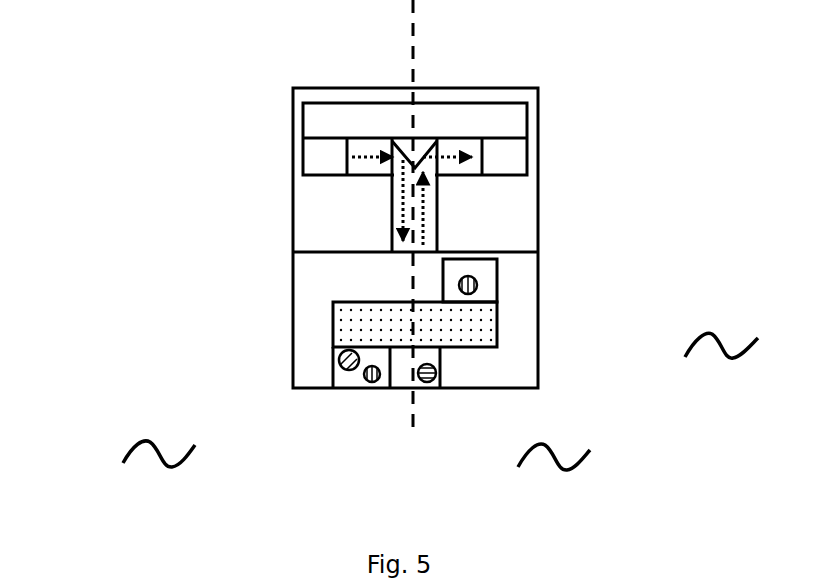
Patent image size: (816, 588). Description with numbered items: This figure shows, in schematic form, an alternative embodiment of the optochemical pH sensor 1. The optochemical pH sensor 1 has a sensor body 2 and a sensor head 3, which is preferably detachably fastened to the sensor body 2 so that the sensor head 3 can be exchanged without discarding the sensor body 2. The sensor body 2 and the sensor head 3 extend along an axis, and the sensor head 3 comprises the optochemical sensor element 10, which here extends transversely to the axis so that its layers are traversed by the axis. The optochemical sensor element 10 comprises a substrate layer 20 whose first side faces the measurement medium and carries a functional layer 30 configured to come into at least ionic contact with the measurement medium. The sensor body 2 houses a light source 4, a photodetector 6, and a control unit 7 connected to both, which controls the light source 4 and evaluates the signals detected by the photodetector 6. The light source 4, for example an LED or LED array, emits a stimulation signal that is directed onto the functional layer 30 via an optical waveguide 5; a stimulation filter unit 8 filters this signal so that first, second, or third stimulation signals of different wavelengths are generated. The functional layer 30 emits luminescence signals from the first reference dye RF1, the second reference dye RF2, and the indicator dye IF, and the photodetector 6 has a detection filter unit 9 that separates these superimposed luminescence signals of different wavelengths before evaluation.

The optochemical pH sensor 1 is at (118, 146).
The sensor body 2 is at (238, 200).
The sensor head 3 is at (230, 365).
The light source 4 is at (323, 166).
The optical waveguide 5 is at (424, 243).
The photodetector 6 is at (500, 157).
The control unit 7 is at (514, 117).
The stimulation filter unit 8 is at (368, 153).
The detection filter unit 9 is at (452, 148).
The optochemical sensor element 10 is at (317, 358).
The substrate layer 20 is at (508, 323).
The functional layer 30 is at (511, 367).
The indicator dye IF is at (349, 370).
The first reference dye RF1 is at (372, 382).
The second reference dye RF2 is at (427, 382).